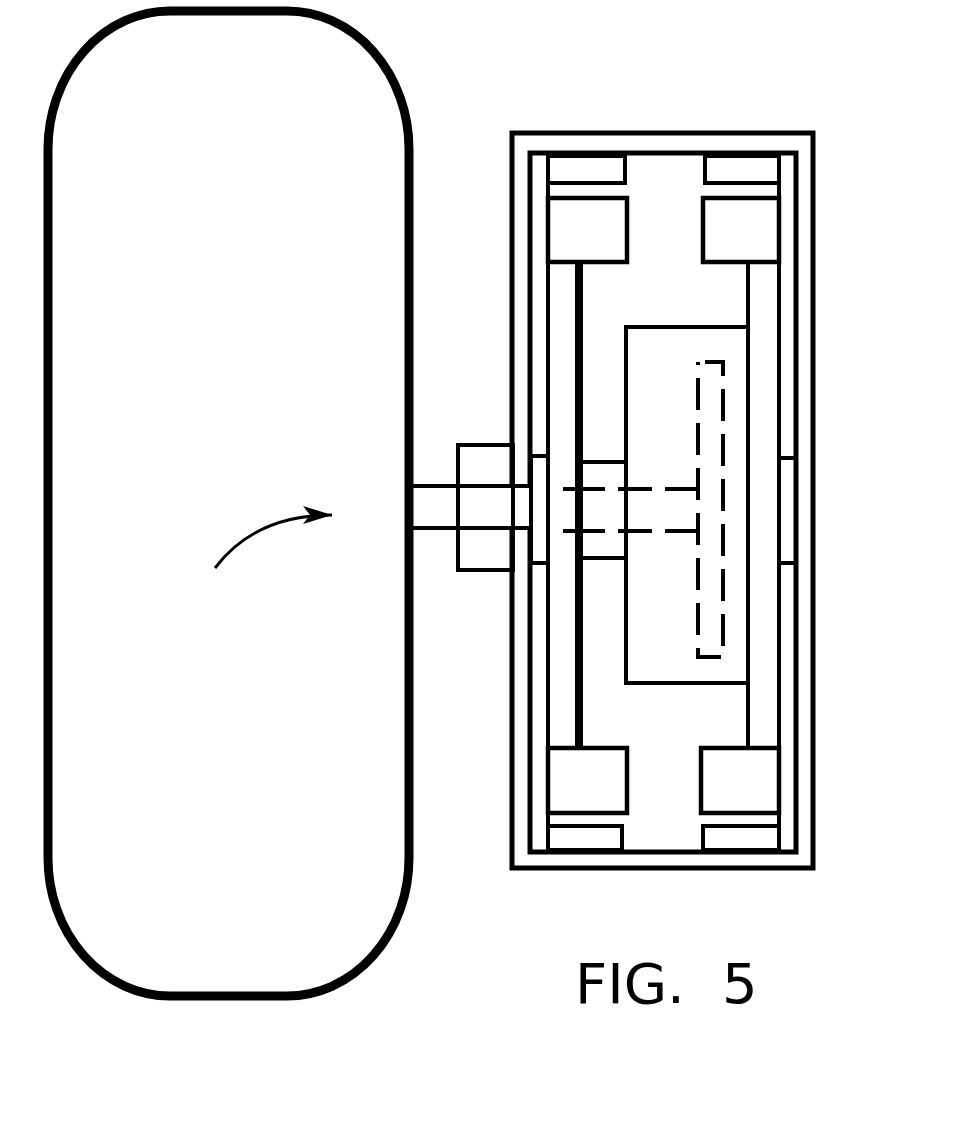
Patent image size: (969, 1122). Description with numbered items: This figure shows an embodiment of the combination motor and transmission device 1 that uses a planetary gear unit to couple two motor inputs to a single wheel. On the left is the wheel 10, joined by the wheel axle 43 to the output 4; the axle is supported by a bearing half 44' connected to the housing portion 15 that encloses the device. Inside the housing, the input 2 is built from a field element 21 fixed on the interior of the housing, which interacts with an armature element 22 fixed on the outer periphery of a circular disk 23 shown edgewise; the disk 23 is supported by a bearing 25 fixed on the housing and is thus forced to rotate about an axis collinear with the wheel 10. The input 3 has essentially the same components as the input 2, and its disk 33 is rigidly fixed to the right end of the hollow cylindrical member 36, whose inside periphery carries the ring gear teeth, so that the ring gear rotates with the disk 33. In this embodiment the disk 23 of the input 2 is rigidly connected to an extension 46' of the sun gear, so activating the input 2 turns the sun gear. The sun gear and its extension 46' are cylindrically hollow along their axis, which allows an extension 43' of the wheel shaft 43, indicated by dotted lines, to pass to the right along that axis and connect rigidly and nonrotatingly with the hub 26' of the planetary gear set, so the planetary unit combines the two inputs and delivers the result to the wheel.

The in-wheel motor unit 1 is at (658, 48).
The input 2 is at (610, 100).
The input 3 is at (743, 100).
The output 4 is at (260, 556).
The wheel 10 is at (400, 93).
The housing portion 15 is at (815, 228).
The field element 21 is at (630, 178).
The armature element 22 is at (628, 246).
The circular disk 23 is at (583, 310).
The bearing 25 is at (545, 455).
The hub 26' is at (792, 509).
The disk 33 is at (779, 327).
The hollow cylindrical member 36 is at (710, 690).
The wheel axle 43 is at (472, 444).
The extension of the wheel shaft 43' is at (727, 544).
The bearing half 44' is at (475, 555).
The extension of the sun gear 46' is at (731, 487).